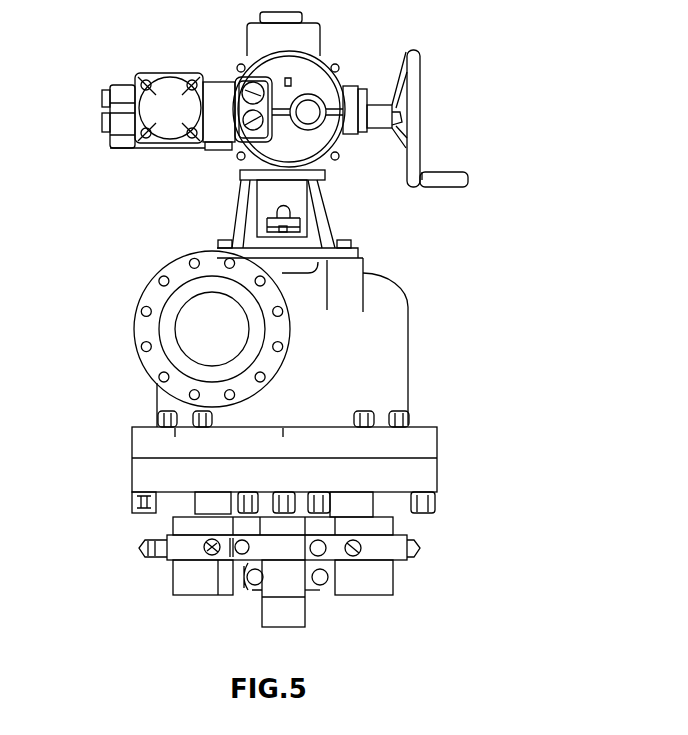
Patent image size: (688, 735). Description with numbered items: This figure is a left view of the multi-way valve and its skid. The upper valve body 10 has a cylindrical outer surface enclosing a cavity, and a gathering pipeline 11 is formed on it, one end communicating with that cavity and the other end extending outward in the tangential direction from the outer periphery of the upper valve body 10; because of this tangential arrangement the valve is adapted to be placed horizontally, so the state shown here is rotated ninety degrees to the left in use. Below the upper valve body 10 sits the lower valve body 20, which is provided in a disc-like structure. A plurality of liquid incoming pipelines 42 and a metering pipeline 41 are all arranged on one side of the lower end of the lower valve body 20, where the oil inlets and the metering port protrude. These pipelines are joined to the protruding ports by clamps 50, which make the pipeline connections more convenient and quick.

The upper valve body 10 is at (390, 355).
The gathering pipeline 11 is at (128, 320).
The lower valve body 20 is at (437, 470).
The metering pipeline 41 is at (262, 608).
The liquid incoming pipelines 42 is at (355, 597).
The clamps 50 is at (413, 560).